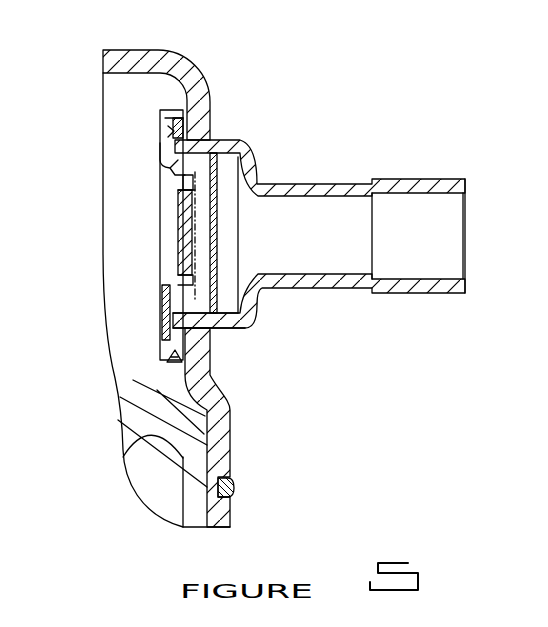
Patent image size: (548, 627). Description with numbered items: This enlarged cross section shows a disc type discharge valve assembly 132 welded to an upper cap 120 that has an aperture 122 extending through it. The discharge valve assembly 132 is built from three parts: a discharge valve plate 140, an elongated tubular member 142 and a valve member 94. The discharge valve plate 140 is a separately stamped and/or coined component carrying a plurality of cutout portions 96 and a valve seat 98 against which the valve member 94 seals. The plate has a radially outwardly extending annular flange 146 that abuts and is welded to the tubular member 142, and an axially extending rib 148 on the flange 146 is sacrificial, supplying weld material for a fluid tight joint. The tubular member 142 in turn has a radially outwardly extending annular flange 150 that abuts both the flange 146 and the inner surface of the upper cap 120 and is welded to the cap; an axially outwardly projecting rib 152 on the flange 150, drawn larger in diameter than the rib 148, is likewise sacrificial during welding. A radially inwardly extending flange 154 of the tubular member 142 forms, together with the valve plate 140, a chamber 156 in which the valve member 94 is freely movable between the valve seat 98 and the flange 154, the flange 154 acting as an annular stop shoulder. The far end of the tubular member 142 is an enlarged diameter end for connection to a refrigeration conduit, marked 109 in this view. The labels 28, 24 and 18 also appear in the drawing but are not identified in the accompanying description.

The upper cap 120 is at (138, 58).
The discharge valve assembly 132 is at (352, 28).
The annular flange 150 is at (188, 131).
The discharge valve plate 140 is at (178, 132).
The radially inwardly extending flange 154 is at (250, 177).
The chamber 156 is at (168, 172).
The chamber 28 is at (136, 245).
The valve seat 98 is at (183, 257).
The valve member 94 is at (218, 274).
The bore 109 is at (412, 194).
The cutout portions 96 is at (195, 262).
The axially extending rib 148 is at (158, 347).
The aperture 122 is at (246, 317).
The elongated tubular member 142 is at (338, 284).
The axially outwardly projecting rib 152 is at (185, 348).
The annular flange 146 is at (170, 356).
The housing lower portion 24 is at (125, 450).
The seal 18 is at (225, 515).